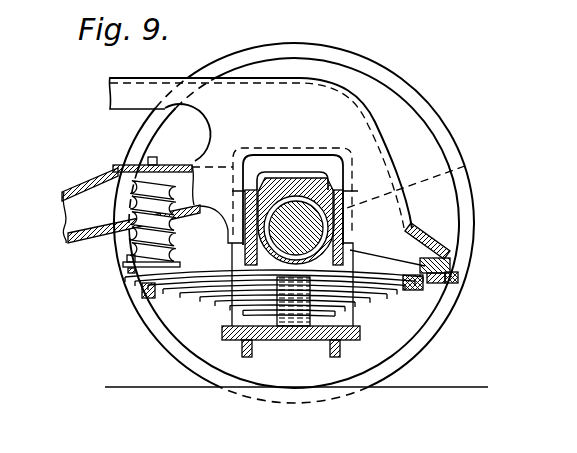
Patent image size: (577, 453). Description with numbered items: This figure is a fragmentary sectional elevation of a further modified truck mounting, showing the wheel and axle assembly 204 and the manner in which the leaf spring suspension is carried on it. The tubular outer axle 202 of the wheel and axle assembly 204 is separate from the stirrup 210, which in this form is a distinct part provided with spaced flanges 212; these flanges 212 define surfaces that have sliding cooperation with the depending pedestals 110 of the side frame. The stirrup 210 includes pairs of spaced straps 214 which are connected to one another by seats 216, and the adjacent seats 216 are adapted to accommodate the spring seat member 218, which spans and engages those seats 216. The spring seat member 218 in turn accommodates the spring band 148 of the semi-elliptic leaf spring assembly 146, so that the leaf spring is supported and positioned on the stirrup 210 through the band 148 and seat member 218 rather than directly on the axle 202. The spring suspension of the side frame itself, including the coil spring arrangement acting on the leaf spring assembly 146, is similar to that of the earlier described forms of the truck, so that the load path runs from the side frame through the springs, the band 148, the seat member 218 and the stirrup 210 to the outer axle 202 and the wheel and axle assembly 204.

The pedestal jaws 110 is at (366, 153).
The semi-elliptic leaf spring assembly 146 is at (393, 297).
The spring band 148 is at (357, 322).
The outer axle 202 is at (307, 184).
The wheel and axle assembly 204 is at (363, 62).
The stirrup 210 is at (342, 262).
The spaced flanges 212 is at (465, 166).
The spaced straps 214 is at (230, 246).
The seats 216 is at (232, 342).
The spring seat member 218 is at (291, 340).